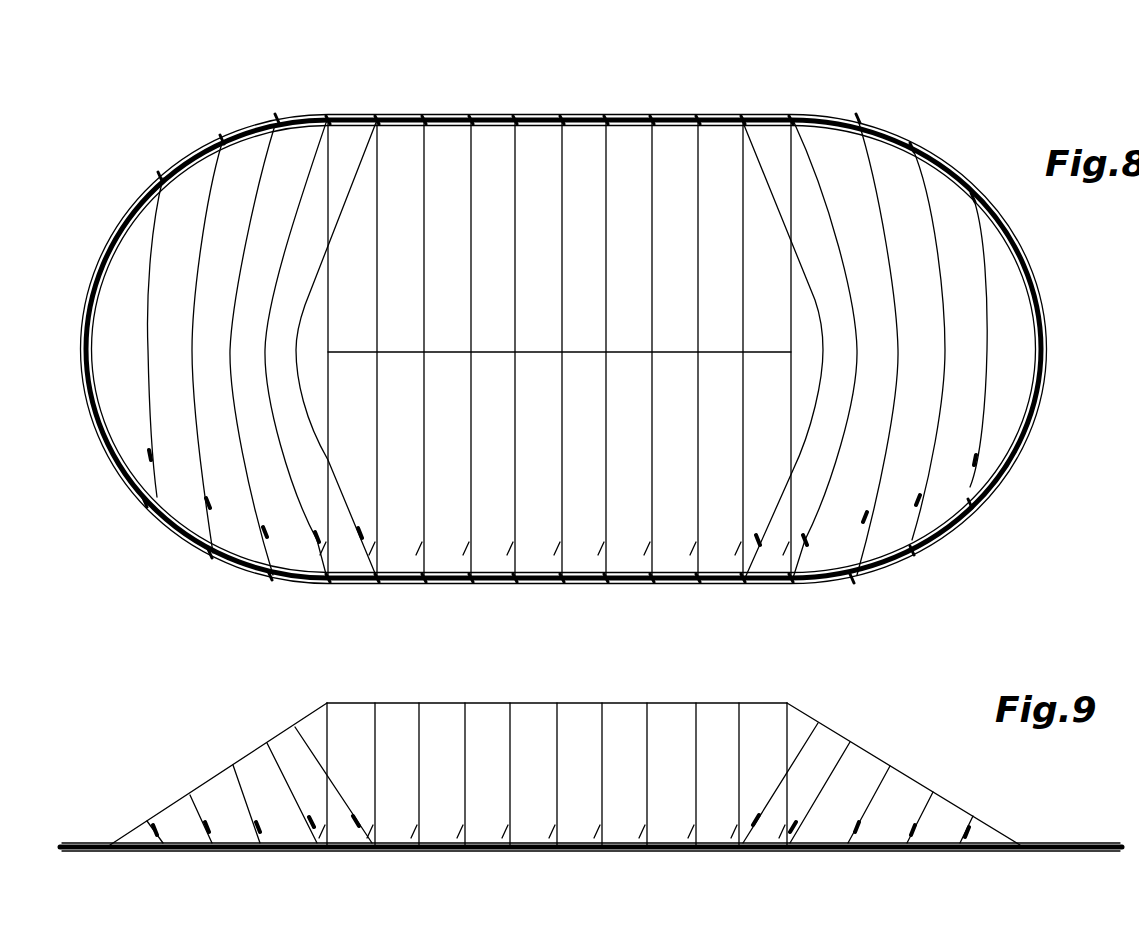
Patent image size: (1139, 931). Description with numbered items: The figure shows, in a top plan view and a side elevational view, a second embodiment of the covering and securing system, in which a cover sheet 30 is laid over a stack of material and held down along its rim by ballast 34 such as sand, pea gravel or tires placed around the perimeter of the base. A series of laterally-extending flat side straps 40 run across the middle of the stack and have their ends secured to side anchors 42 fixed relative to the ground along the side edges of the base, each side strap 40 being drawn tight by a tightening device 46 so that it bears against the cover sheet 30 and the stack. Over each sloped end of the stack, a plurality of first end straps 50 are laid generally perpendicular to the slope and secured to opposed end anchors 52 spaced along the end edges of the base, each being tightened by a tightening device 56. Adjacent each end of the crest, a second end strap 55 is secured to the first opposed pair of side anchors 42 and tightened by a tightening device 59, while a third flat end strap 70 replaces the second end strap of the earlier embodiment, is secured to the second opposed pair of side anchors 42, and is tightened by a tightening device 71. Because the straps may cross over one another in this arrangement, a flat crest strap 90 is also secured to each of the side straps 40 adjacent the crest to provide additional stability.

In FIG. 8, the cover sheet 30 is at (580, 130).
In FIG. 8, the ballast 34 is at (113, 441).
In FIG. 9, the ballast 34 is at (1010, 843).
In FIG. 8, the flat side strap 40 is at (377, 300).
In FIG. 9, the flat side strap 40 is at (327, 748).
In FIG. 8, the side anchor 42 is at (331, 116).
In FIG. 8, the tightening device 46 is at (325, 535).
In FIG. 9, the tightening device 46 is at (377, 818).
In FIG. 8, the first end strap 50 is at (194, 291).
In FIG. 9, the first end strap 50 is at (140, 825).
In FIG. 8, the end anchor 52 is at (160, 175).
In FIG. 8, the second end strap 55 is at (280, 284).
In FIG. 9, the second end strap 55 is at (246, 757).
In FIG. 8, the tightening device 56 is at (152, 456).
In FIG. 9, the tightening device 56 is at (157, 830).
In FIG. 8, the tightening device 59 is at (316, 537).
In FIG. 9, the tightening device 59 is at (311, 823).
In FIG. 8, the third flat end strap 70 is at (304, 303).
In FIG. 9, the third flat end strap 70 is at (281, 735).
In FIG. 8, the tightening device 71 is at (360, 531).
In FIG. 9, the tightening device 71 is at (356, 819).
In FIG. 8, the flat crest strap 90 is at (497, 353).